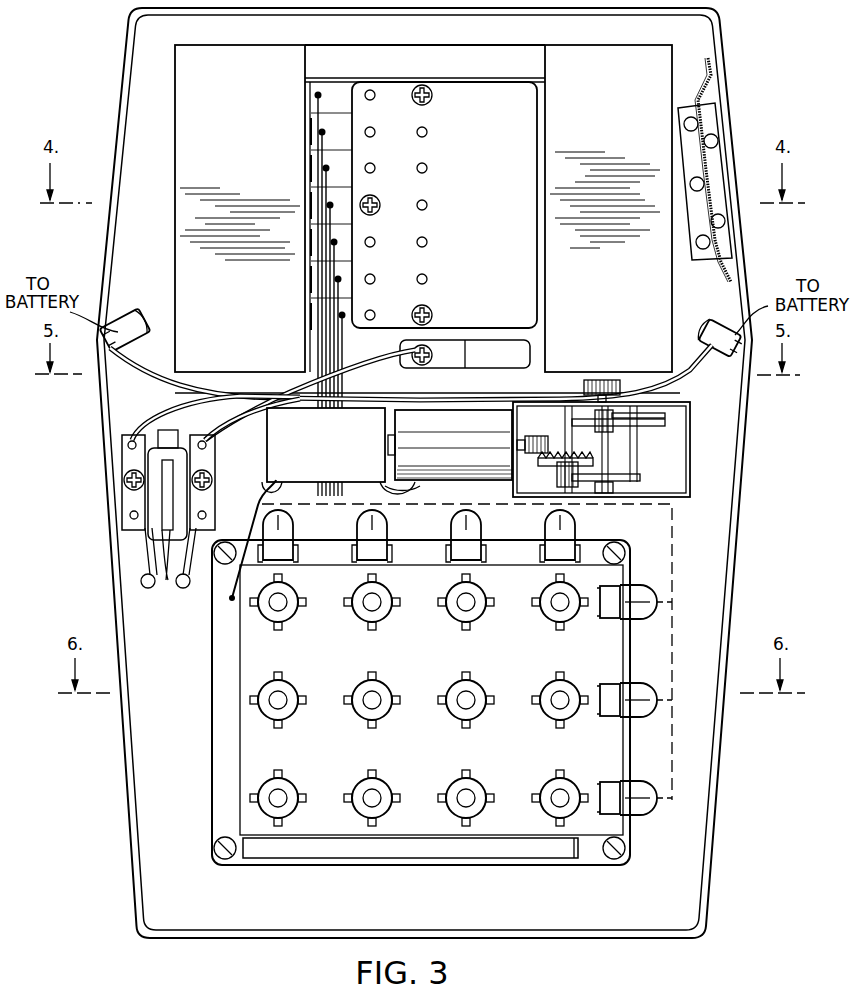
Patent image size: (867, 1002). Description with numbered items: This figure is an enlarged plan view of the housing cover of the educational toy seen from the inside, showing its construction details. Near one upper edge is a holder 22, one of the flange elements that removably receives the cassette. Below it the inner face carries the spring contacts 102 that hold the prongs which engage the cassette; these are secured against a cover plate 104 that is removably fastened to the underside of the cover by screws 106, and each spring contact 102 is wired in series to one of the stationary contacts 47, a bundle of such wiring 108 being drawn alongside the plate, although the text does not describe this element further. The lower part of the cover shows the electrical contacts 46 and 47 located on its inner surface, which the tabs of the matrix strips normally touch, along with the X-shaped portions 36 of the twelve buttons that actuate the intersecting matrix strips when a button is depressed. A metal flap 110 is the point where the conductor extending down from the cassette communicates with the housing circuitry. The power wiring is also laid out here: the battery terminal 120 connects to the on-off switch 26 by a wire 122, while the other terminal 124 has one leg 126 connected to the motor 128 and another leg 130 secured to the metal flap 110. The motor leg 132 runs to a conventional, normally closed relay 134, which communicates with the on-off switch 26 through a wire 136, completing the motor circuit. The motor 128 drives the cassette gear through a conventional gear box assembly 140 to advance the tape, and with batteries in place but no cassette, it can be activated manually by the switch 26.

The holder 22 is at (715, 127).
The on-off switch 26 is at (160, 570).
The X-shaped portion 36 is at (486, 576).
The electrical contact 46 is at (515, 846).
The stationary contact 47 is at (642, 808).
The spring contact 102 is at (340, 100).
The cover plate 104 is at (470, 160).
The screw 106 is at (433, 98).
The ribbon cable 108 is at (314, 345).
The metal flap 110 is at (475, 364).
The battery terminal 120 is at (716, 330).
The wire 122 is at (700, 372).
The terminal 124 is at (128, 320).
The leg 126 is at (386, 396).
The motor 128 is at (446, 450).
The leg 130 is at (243, 426).
The motor leg 132 is at (422, 492).
The relay 134 is at (313, 454).
The wire 136 is at (228, 432).
The gear box assembly 140 is at (672, 462).